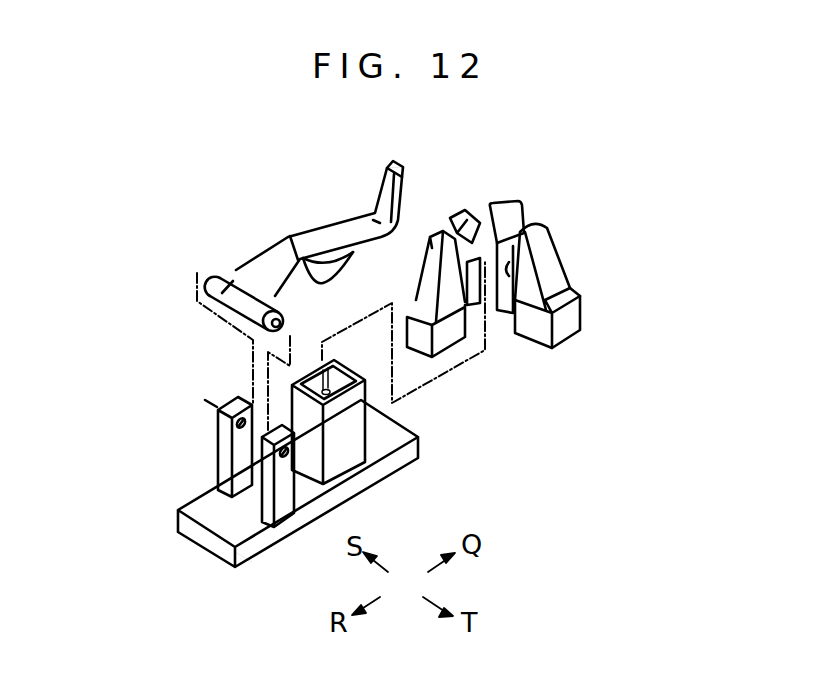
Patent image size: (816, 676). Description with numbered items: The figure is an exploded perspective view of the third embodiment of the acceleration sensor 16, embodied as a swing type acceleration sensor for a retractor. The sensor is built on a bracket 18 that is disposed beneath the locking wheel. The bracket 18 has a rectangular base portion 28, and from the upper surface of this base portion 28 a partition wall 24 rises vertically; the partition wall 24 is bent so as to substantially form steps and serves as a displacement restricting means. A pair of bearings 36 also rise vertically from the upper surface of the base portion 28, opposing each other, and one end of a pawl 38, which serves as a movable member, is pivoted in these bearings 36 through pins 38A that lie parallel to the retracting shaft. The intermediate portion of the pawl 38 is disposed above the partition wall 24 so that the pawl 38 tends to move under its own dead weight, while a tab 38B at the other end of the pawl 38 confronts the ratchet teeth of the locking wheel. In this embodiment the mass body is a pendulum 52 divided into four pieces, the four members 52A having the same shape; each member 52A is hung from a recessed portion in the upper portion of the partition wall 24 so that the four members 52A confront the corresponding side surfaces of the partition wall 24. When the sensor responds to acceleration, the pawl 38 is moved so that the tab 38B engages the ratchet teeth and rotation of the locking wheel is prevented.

The acceleration sensor 16 is at (158, 303).
The bracket 18 is at (184, 547).
The partition wall 24 is at (352, 433).
The base portion 28 is at (254, 556).
The bearings 36 is at (217, 447).
The pawl 38 is at (270, 228).
The pins 38A is at (210, 278).
The tab 38B is at (405, 188).
The pendulum 52 is at (580, 236).
The members 52A is at (462, 214).